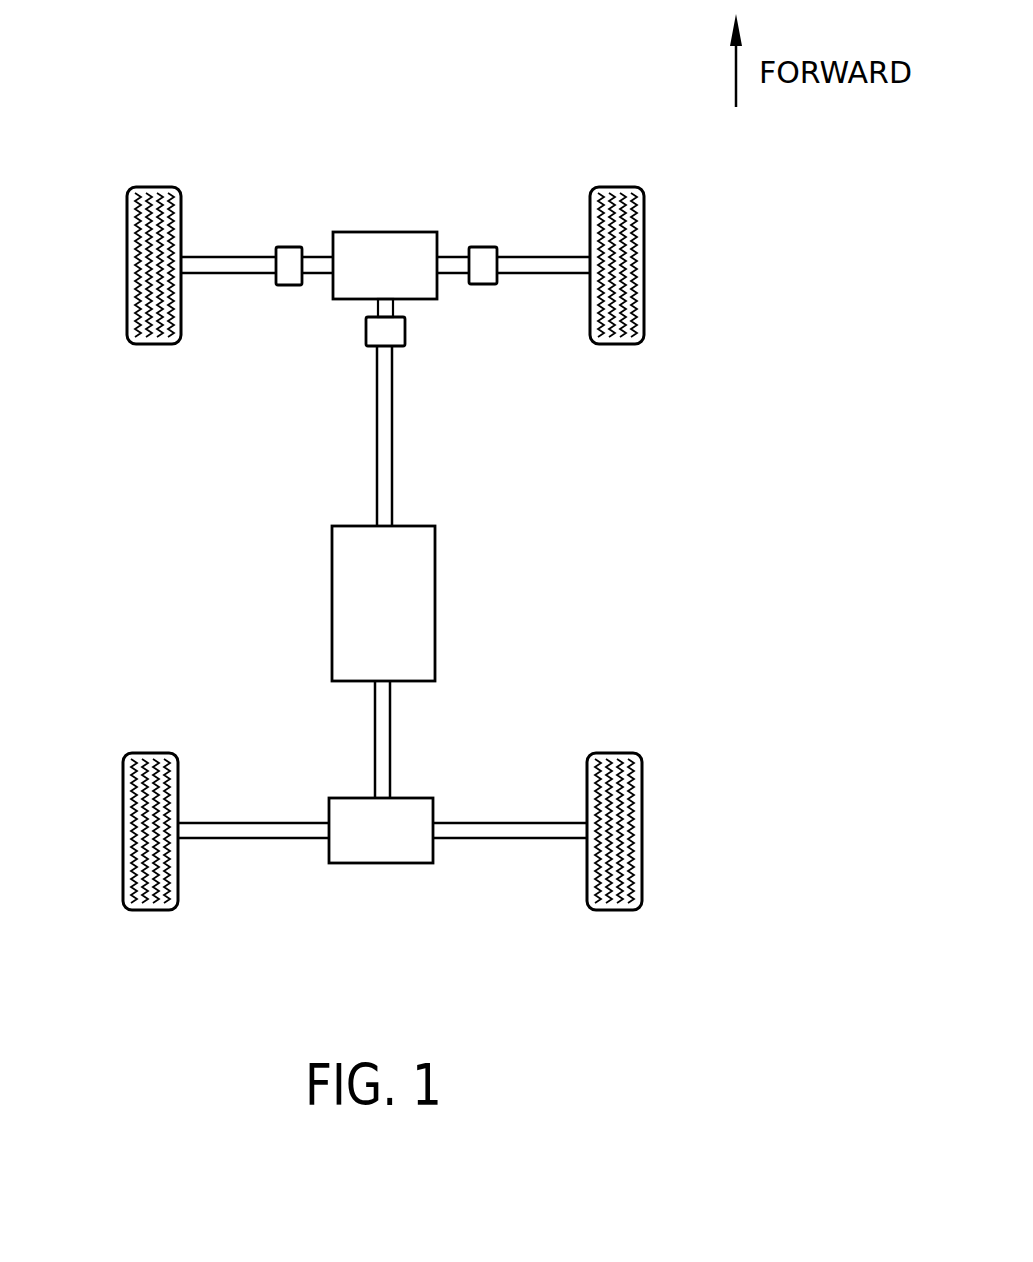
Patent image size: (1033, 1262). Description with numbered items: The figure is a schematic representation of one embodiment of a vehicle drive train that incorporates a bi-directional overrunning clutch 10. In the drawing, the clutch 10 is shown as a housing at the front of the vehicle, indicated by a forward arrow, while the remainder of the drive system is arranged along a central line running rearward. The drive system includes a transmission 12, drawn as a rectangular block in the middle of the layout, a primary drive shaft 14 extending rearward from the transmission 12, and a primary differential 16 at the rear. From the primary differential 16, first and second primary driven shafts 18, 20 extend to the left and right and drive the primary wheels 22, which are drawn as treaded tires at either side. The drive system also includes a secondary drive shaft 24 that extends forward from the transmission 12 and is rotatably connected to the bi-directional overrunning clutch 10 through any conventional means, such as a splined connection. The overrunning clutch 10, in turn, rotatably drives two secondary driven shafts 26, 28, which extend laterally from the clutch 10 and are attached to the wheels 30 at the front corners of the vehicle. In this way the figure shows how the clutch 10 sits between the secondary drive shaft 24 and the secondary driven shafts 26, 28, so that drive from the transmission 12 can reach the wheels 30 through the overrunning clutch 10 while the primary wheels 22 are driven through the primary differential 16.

The bi-directional overrunning clutch 10 is at (385, 199).
The transmission 12 is at (415, 605).
The primary drive shaft 14 is at (385, 737).
The primary differential 16 is at (387, 845).
The first primary driven shaft 18 is at (246, 831).
The second primary driven shaft 20 is at (493, 830).
The primary wheels 22 is at (152, 910).
The secondary drive shaft 24 is at (387, 436).
The secondary driven shaft 26 is at (232, 265).
The secondary driven shaft 28 is at (539, 265).
The wheels 30 is at (130, 277).